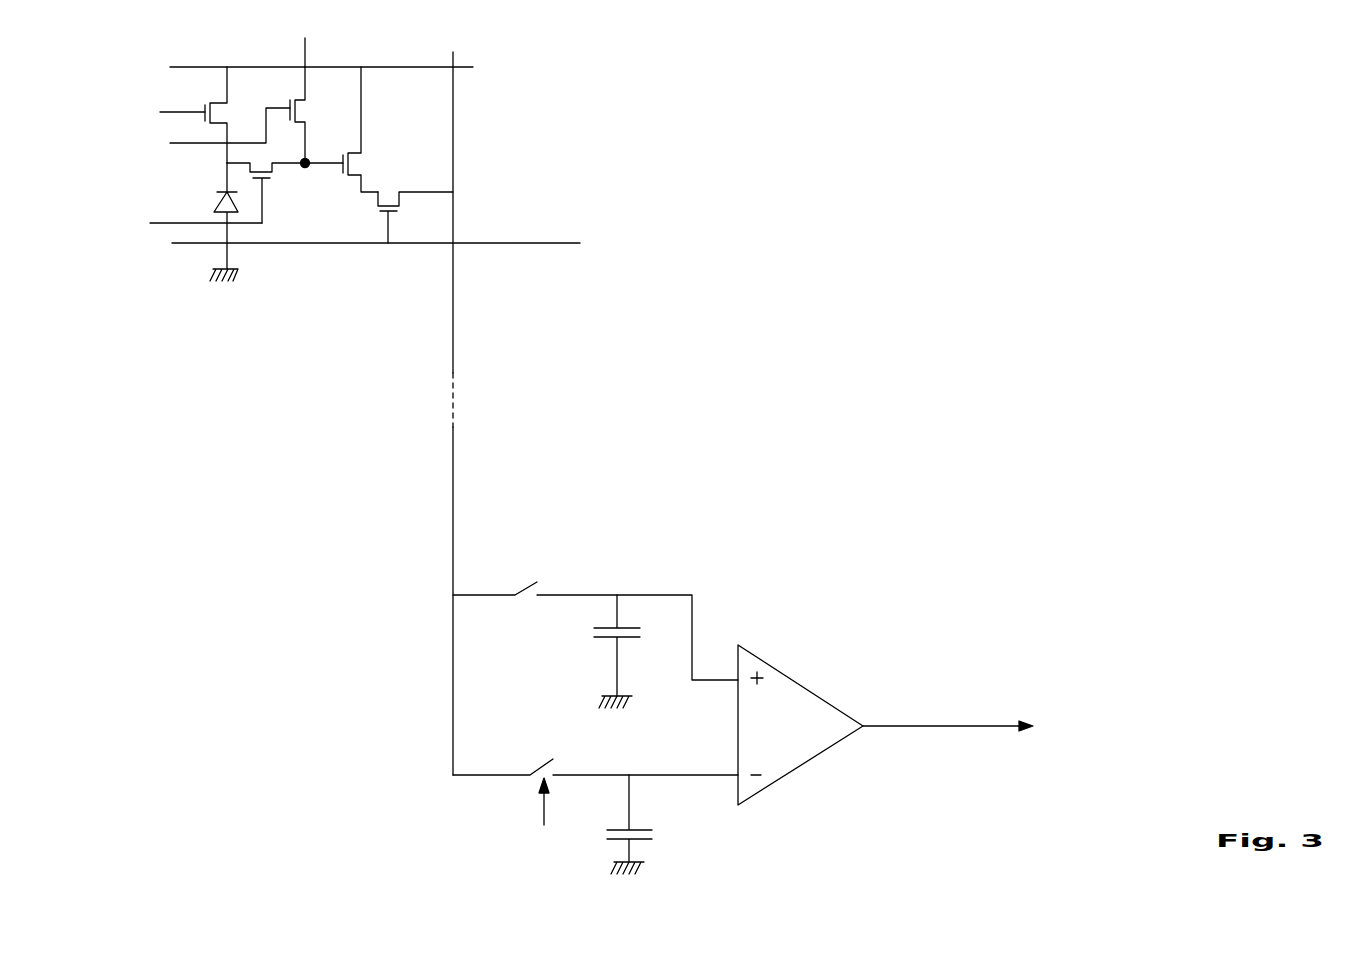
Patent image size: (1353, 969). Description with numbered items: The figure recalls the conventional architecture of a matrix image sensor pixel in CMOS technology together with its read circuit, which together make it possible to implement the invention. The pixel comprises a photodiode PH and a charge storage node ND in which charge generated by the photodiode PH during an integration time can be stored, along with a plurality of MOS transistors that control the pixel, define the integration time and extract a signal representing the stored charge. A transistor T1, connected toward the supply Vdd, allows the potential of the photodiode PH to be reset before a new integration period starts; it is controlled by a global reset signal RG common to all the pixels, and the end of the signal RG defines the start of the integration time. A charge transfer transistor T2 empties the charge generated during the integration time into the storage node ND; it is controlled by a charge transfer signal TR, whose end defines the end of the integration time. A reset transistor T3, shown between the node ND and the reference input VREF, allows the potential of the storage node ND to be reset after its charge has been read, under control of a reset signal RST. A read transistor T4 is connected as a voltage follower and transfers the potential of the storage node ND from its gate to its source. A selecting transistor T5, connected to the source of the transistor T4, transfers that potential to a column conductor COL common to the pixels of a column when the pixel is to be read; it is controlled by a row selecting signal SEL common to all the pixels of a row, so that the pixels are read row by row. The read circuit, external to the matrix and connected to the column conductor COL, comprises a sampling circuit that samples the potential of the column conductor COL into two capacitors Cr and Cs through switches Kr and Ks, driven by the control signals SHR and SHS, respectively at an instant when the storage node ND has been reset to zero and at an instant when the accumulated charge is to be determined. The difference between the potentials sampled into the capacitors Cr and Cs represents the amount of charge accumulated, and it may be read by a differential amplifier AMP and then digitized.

The supply voltage rail Vdd is at (321, 53).
The reference voltage input VREF is at (307, 43).
The global reset signal RG is at (162, 108).
The reset signal RST is at (203, 134).
The charge transfer signal TR is at (189, 220).
The row selecting signal SEL is at (349, 250).
The transistor T1 is at (207, 115).
The charge transfer transistor T2 is at (266, 193).
The reset transistor T3 is at (311, 115).
The read transistor T4 is at (366, 129).
The selecting transistor T5 is at (415, 217).
The charge storage node ND is at (319, 176).
The photodiode PH is at (209, 222).
The column conductor COL is at (480, 413).
The switch Ks is at (595, 631).
The signal sample-and-hold control SHS is at (560, 564).
The capacitor Cs is at (628, 651).
The switch Kr is at (595, 759).
The reference sample-and-hold control SHR is at (536, 819).
The capacitor Cr is at (642, 824).
The differential amplifier AMP is at (885, 725).